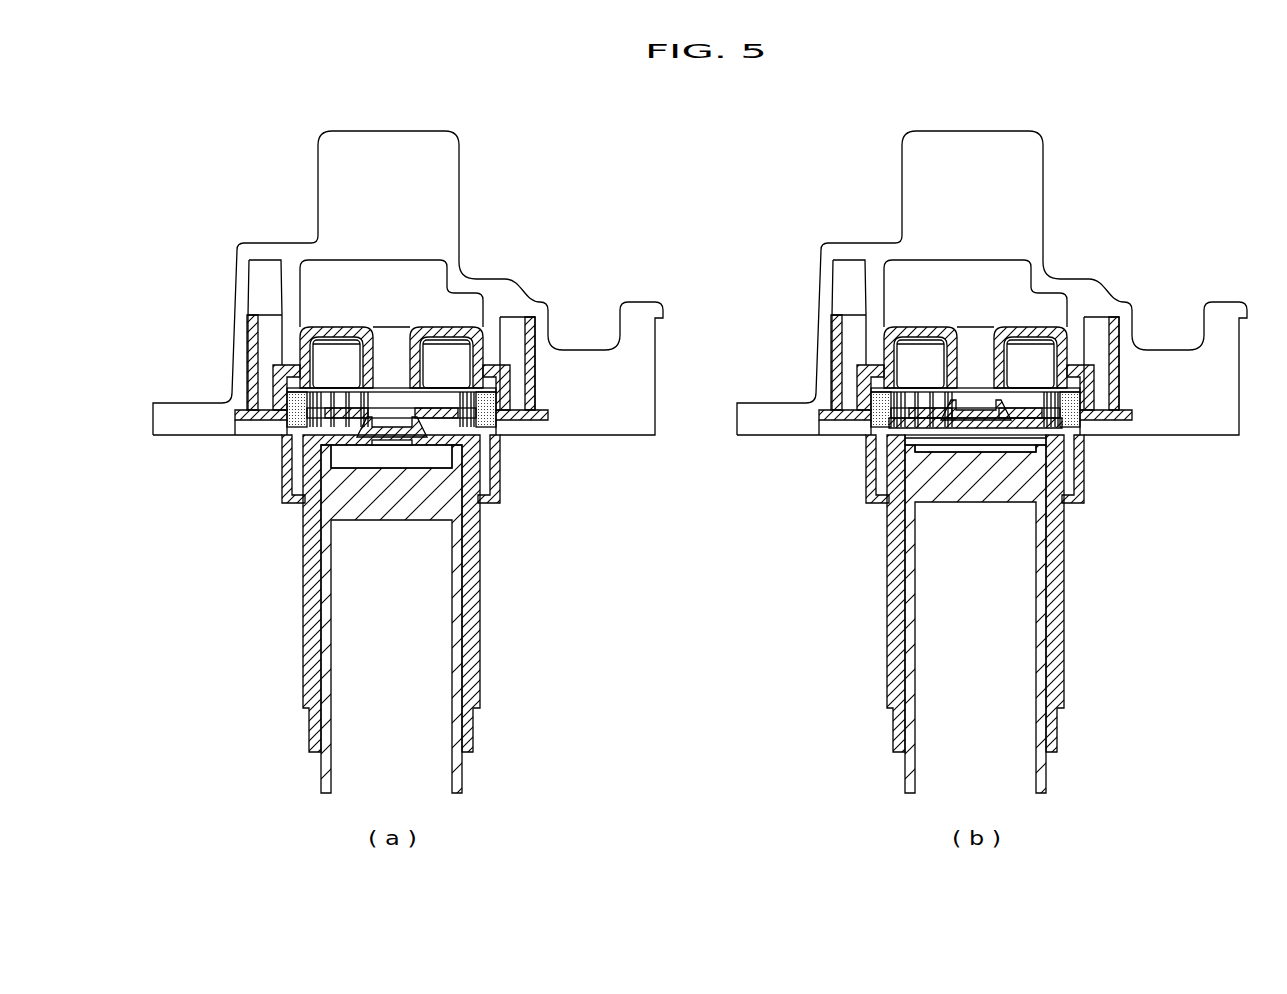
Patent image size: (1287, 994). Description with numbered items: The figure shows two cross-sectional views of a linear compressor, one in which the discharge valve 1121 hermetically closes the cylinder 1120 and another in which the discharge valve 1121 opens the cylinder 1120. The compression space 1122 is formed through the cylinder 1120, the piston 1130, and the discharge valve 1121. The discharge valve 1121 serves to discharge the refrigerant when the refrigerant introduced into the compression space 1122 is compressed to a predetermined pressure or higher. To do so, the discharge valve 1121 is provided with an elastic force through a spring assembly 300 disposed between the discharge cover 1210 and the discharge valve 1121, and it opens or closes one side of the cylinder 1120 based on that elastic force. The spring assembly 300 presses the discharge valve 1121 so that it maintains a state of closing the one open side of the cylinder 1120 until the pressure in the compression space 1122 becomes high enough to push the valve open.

In FIG. 5A, the discharge cover 1210 is at (412, 132).
In FIG. 5B, the discharge cover 1210 is at (992, 258).
In FIG. 5A, the spring assembly 300 is at (507, 430).
In FIG. 5B, the spring assembly 300 is at (992, 394).
In FIG. 5A, the cylinder 1120 is at (303, 565).
In FIG. 5B, the cylinder 1120 is at (940, 593).
In FIG. 5A, the discharge valve 1121 is at (317, 451).
In FIG. 5B, the discharge valve 1121 is at (943, 469).
In FIG. 5A, the compression space 1122 is at (381, 458).
In FIG. 5B, the compression space 1122 is at (1033, 468).
In FIG. 5A, the piston 1130 is at (457, 515).
In FIG. 5B, the piston 1130 is at (1025, 619).